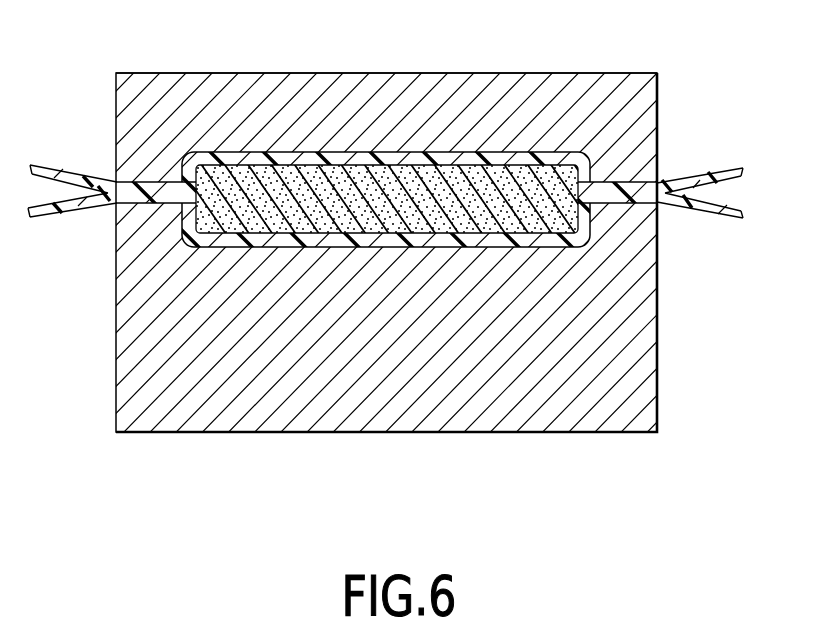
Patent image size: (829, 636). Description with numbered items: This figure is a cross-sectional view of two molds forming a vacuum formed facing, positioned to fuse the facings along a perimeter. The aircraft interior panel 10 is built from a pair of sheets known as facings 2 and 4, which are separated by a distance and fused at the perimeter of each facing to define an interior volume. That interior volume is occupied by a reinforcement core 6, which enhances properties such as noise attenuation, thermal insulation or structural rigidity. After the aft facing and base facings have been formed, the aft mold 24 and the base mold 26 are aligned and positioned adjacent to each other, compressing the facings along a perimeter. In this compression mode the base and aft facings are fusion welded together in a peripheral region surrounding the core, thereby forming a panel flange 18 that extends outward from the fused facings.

The facing 2 is at (400, 248).
The facing 4 is at (385, 152).
The reinforcement core 6 is at (303, 167).
The aircraft interior panel 10 is at (442, 153).
The panel flange 18 is at (138, 198).
The aft mold 24 is at (658, 90).
The base mold 26 is at (656, 378).